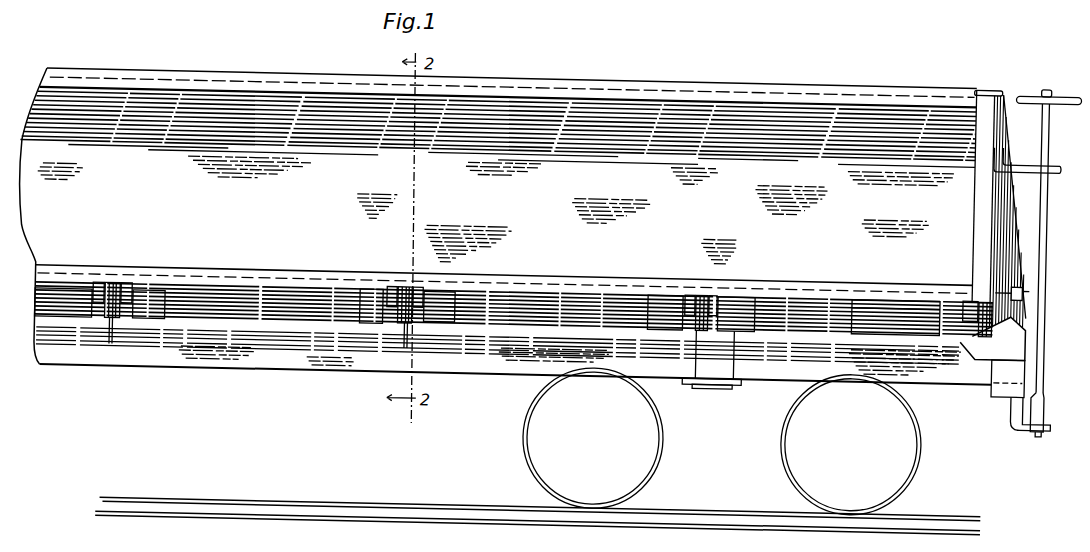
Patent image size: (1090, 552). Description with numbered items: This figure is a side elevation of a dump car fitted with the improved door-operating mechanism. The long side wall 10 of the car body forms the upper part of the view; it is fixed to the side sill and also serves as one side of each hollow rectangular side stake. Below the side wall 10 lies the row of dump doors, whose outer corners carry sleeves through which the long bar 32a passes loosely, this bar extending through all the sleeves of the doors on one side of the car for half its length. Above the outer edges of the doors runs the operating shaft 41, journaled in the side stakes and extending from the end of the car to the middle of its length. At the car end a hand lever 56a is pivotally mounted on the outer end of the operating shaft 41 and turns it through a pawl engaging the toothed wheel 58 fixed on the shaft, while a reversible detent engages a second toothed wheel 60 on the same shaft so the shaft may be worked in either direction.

The side wall 10 is at (506, 225).
The long bar 32a is at (170, 283).
The operating shaft 41 is at (1016, 270).
The hand lever 56a is at (1032, 262).
The toothed wheel 58 is at (1027, 272).
The toothed wheel 60 is at (1013, 256).